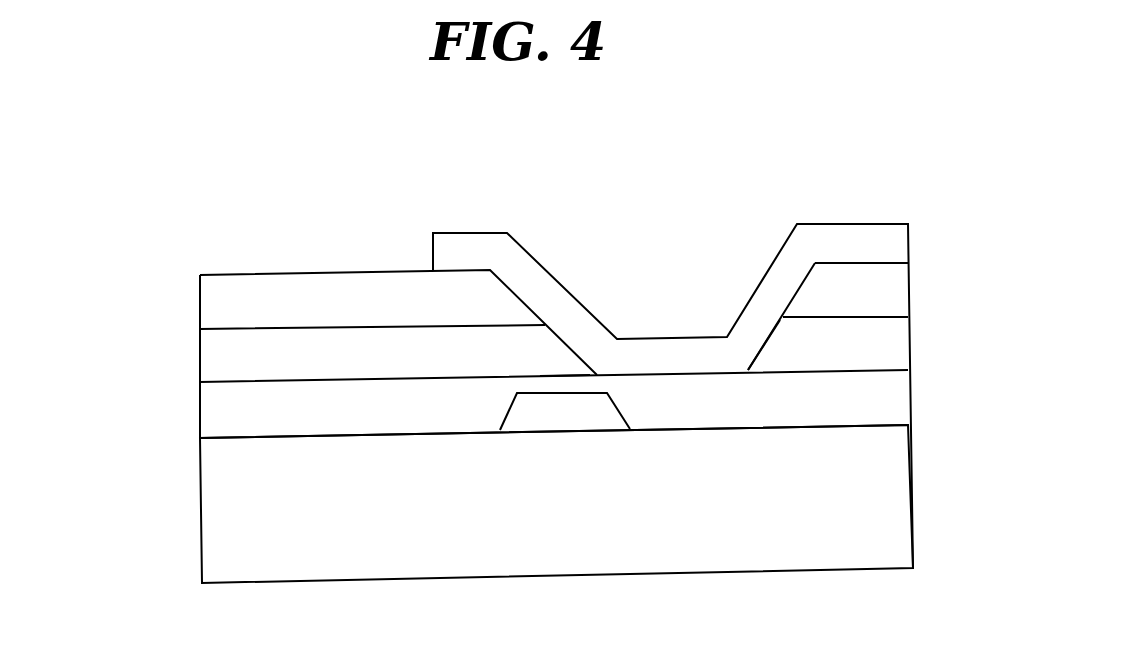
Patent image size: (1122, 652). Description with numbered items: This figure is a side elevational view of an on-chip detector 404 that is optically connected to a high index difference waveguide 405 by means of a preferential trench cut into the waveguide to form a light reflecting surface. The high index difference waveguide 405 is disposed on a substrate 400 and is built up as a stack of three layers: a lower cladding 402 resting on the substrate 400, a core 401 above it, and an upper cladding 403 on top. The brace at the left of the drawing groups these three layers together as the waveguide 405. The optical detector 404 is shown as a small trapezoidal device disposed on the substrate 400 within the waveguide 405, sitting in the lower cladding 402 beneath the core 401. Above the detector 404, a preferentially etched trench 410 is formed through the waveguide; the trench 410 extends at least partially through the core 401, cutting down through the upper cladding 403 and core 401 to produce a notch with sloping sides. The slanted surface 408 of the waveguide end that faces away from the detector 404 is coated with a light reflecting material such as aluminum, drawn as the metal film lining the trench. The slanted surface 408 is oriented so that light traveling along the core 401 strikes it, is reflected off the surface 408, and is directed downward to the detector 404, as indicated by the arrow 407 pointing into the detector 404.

The substrate 400 is at (584, 537).
The core 401 is at (316, 371).
The lower cladding 402 is at (316, 424).
The upper cladding 403 is at (316, 318).
The on-chip detector 404 is at (565, 411).
The high index difference waveguide 405 is at (180, 277).
The arrow 407 is at (561, 378).
The slanted surface 408 is at (568, 341).
The preferentially etched trench 410 is at (745, 372).